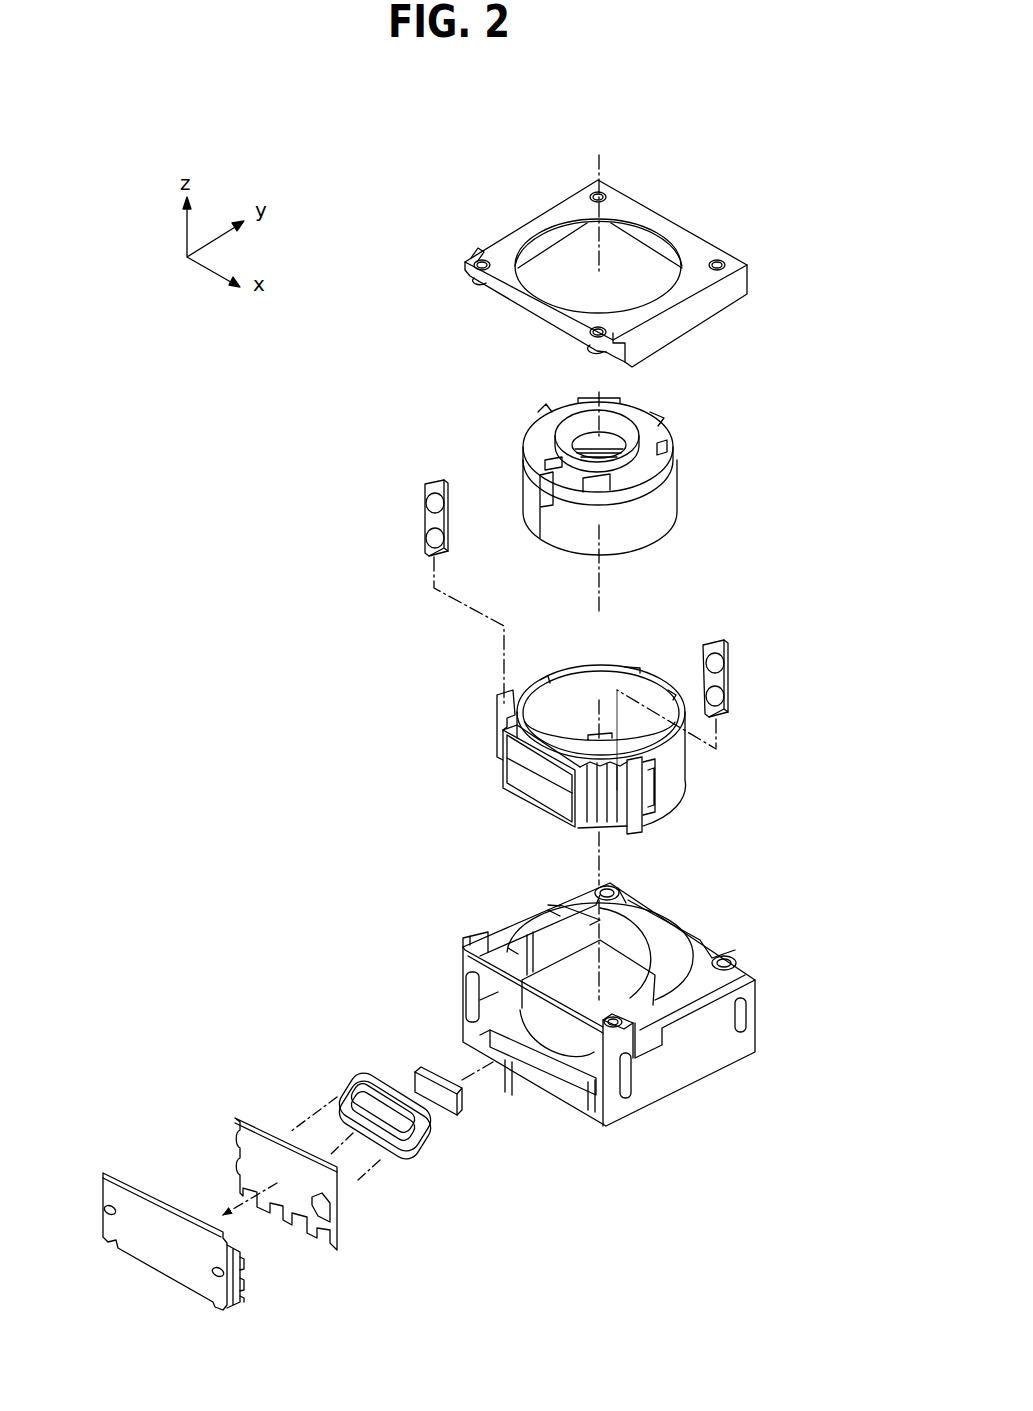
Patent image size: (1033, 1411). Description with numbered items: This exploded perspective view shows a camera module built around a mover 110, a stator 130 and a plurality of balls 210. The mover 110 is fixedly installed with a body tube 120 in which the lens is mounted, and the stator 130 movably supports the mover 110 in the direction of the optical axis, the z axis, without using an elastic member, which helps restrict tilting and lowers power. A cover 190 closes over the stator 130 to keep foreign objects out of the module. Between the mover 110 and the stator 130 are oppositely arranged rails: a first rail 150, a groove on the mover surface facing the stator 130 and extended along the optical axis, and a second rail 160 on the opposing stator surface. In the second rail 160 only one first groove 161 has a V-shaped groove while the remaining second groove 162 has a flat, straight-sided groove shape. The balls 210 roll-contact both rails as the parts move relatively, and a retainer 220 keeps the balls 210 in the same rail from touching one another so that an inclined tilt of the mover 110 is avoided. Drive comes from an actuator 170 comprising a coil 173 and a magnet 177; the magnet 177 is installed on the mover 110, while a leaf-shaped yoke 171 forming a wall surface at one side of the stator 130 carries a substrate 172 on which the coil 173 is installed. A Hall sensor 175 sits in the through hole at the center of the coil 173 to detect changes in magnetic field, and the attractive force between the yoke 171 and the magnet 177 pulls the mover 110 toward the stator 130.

The mover 110 is at (680, 765).
The body tube 120 is at (664, 494).
The stator 130 is at (684, 1064).
The first rail 150 is at (500, 716).
The second rail 160 is at (424, 867).
The first groove 161 is at (555, 913).
The second groove 162 is at (512, 948).
The actuator 170 is at (126, 867).
The yoke 171 is at (147, 1213).
The substrate 172 is at (264, 1150).
The coil 173 is at (340, 1093).
The Hall sensor 175 is at (418, 1073).
The magnet 177 is at (545, 772).
The cover 190 is at (516, 234).
The ball 210 is at (434, 538).
The retainer 220 is at (437, 482).